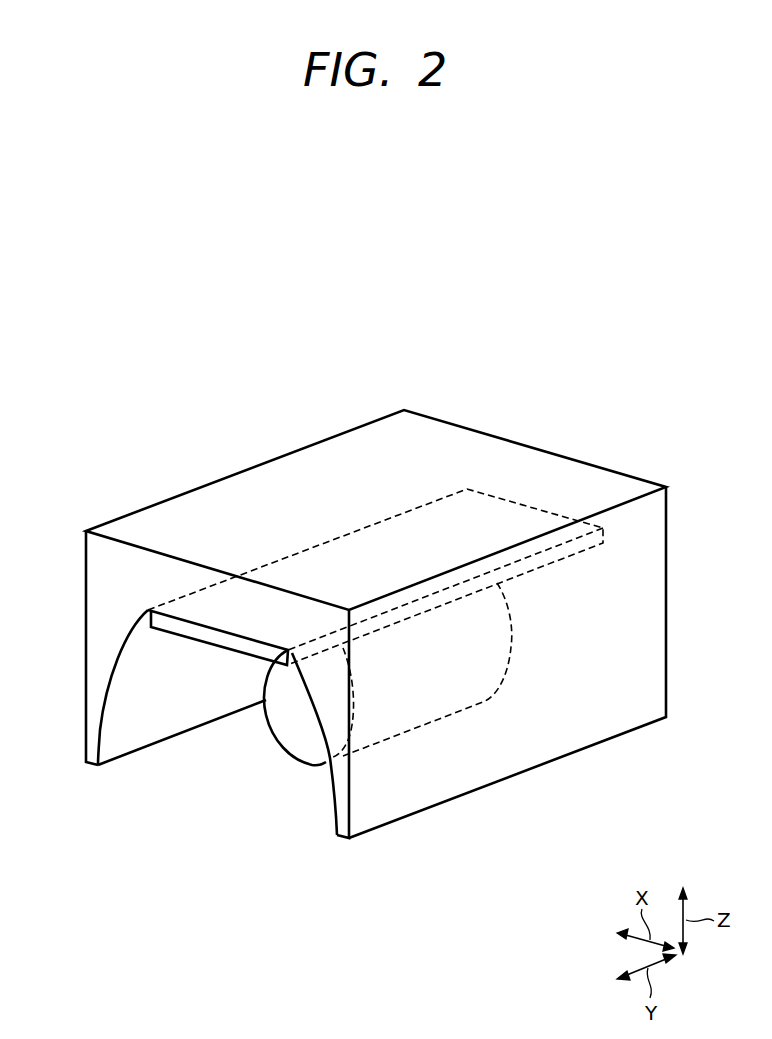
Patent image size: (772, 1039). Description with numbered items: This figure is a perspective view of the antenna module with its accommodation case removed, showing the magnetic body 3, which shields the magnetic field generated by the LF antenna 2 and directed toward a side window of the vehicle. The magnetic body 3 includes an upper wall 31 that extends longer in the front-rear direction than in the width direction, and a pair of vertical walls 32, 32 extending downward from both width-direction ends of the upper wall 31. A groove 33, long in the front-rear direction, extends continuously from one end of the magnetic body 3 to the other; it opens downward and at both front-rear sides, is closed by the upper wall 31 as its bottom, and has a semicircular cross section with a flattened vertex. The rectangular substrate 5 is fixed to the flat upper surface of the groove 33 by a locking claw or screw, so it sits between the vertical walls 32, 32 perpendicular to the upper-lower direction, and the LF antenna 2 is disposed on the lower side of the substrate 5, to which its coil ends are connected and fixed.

The LF antenna 2 is at (299, 761).
The magnetic body 3 is at (346, 611).
The upper wall 31 is at (340, 462).
The vertical wall 32 is at (110, 625).
The groove 33 is at (148, 712).
The substrate 5 is at (228, 646).